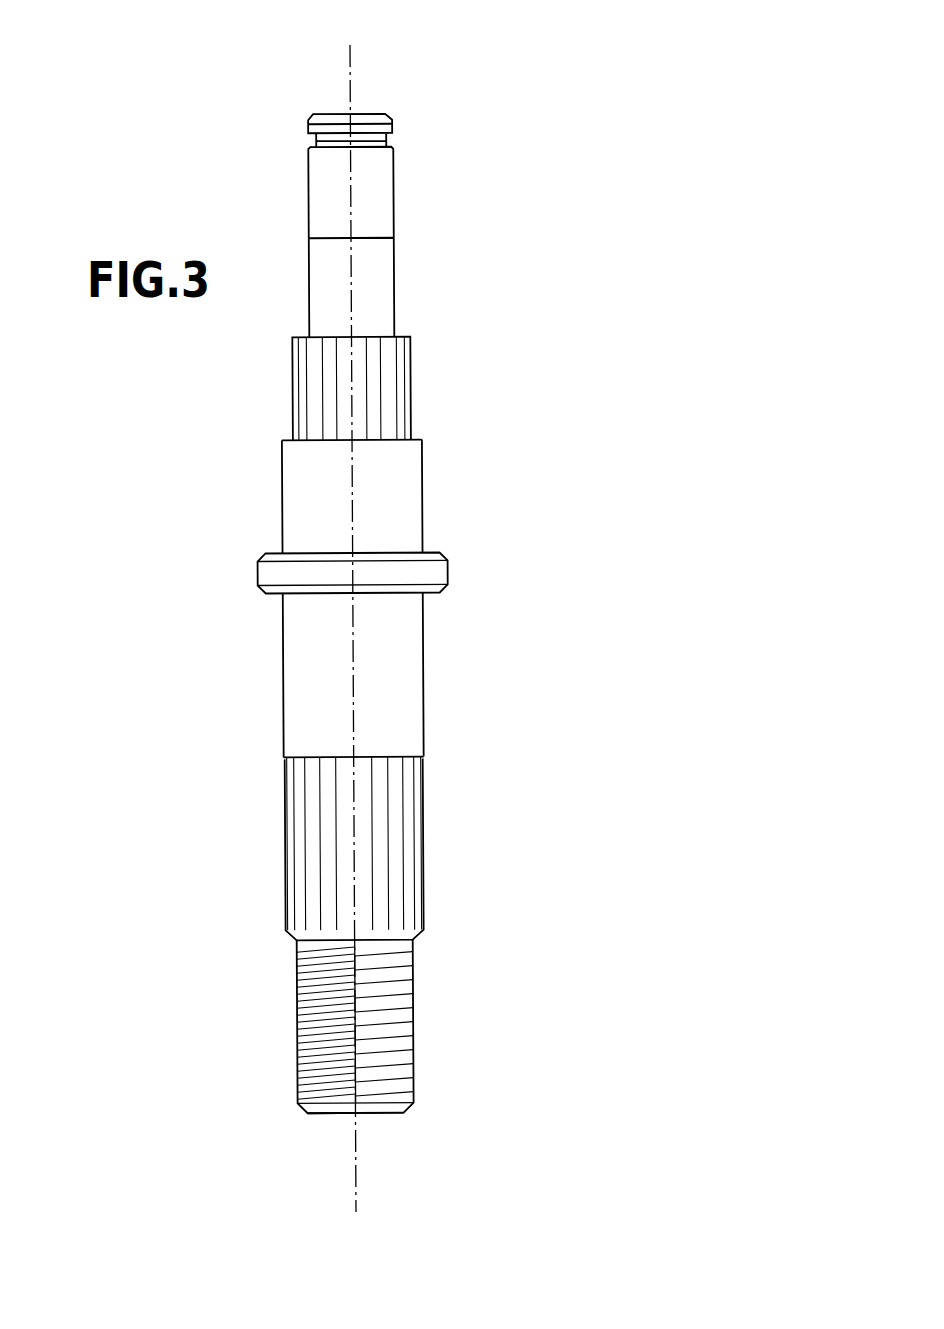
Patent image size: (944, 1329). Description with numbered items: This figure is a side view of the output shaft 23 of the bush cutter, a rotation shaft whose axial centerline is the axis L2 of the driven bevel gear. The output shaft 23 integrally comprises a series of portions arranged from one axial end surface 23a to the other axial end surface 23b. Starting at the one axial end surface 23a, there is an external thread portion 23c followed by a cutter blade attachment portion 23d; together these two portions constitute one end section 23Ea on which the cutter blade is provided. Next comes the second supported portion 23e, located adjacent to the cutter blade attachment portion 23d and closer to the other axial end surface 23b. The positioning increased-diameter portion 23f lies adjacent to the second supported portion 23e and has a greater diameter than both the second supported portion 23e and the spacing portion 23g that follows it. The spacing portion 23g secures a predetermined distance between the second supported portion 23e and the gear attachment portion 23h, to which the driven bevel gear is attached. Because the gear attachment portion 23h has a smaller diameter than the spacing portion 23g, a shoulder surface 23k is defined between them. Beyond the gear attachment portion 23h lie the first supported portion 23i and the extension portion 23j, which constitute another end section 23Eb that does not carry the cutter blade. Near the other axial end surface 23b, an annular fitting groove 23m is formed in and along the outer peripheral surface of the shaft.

The output shaft 23 is at (192, 147).
The one axial end surface 23a is at (387, 1113).
The other axial end surface 23b is at (367, 113).
The external thread portion 23c is at (429, 1026).
The cutter blade attachment portion 23d is at (410, 845).
The second supported portion 23e is at (412, 693).
The positioning increased-diameter portion 23f is at (440, 573).
The spacing portion 23g is at (412, 500).
The gear attachment portion 23h is at (397, 390).
The first supported portion 23i is at (383, 280).
The extension portion 23j is at (383, 203).
The shoulder surface 23k is at (414, 437).
The annular fitting groove 23m is at (387, 143).
The one end section 23Ea is at (476, 934).
The another end section 23Eb is at (482, 241).
The axis of the driven bevel gear L2 is at (356, 1165).